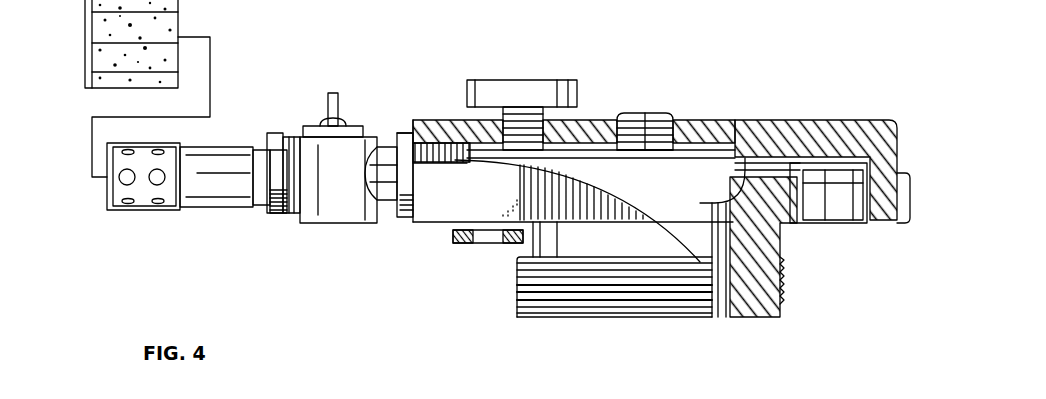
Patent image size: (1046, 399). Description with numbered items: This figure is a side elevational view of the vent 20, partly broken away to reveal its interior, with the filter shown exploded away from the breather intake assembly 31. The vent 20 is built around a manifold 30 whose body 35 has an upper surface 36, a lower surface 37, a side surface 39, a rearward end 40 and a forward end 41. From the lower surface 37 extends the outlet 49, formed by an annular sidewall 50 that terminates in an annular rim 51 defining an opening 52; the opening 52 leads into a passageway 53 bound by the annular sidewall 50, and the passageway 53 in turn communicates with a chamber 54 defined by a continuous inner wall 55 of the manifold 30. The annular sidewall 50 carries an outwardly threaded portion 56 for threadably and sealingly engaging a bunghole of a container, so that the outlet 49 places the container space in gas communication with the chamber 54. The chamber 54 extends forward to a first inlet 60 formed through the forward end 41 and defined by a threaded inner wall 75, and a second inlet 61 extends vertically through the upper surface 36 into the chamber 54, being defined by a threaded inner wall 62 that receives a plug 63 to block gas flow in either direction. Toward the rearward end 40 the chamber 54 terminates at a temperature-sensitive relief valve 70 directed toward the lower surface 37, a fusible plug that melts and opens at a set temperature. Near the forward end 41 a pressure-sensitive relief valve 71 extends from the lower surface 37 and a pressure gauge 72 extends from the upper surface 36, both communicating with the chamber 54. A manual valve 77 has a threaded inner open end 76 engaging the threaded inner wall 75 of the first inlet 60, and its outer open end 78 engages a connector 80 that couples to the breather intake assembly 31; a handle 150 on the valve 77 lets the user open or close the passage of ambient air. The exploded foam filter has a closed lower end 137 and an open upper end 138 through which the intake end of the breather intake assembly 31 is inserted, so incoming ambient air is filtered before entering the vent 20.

The vent 20 is at (643, 193).
The manifold 30 is at (655, 184).
The breather intake assembly 31 is at (227, 207).
The body 35 is at (863, 117).
The upper surface 36 is at (800, 117).
The lower surface 37 is at (525, 255).
The side surface 39 is at (463, 200).
The rearward end 40 is at (903, 173).
The forward end 41 is at (410, 223).
The outlet 49 is at (520, 323).
The annular sidewall 50 is at (563, 320).
The annular rim 51 is at (607, 320).
The opening 52 is at (637, 323).
The passageway 53 is at (733, 243).
The chamber 54 is at (712, 194).
The continuous inner wall 55 is at (697, 150).
The outwardly threaded portion 56 is at (780, 295).
The first port or inlet 60 is at (427, 143).
The second port or inlet 61 is at (643, 120).
The threaded inner wall 62 is at (623, 117).
The plug 63 is at (663, 113).
The temperature-sensitive relief valve 70 is at (830, 207).
The pressure-sensitive relief valve 71 is at (487, 243).
The pressure gauge 72 is at (520, 92).
The threaded inner wall 75 is at (397, 143).
The threaded inner open end 76 is at (440, 147).
The valve 77 is at (337, 207).
The outer open end 78 is at (283, 157).
The connector 80 is at (273, 213).
The closed lower end 137 is at (86, 58).
The open upper end 138 is at (180, 28).
The handle 150 is at (328, 95).